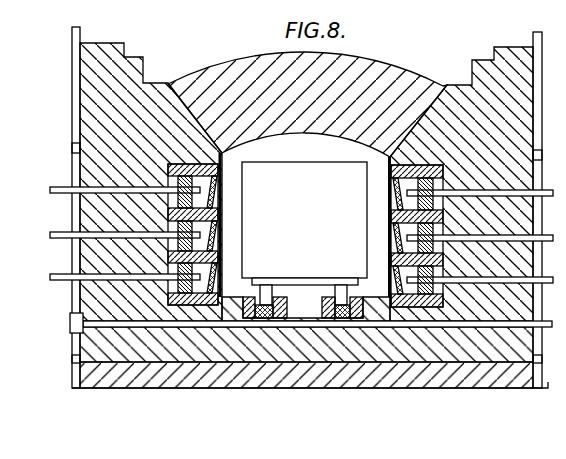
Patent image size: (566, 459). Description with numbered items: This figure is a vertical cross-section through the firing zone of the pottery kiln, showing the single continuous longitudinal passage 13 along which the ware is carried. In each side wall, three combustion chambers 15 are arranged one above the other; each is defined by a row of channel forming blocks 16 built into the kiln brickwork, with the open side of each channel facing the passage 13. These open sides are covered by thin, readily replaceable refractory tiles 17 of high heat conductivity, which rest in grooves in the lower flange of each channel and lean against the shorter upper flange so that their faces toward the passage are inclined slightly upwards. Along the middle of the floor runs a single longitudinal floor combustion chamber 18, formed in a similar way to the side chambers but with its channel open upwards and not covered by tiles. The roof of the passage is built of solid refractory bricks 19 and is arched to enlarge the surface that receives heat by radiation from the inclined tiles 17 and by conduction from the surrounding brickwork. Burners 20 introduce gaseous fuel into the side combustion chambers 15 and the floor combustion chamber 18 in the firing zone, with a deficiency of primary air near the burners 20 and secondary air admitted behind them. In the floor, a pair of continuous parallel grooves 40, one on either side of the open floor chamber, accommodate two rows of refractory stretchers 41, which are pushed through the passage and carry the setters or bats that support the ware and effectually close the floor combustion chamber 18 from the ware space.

The longitudinal passage 13 is at (327, 145).
The combustion chambers 15 is at (209, 288).
The channel forming blocks 16 is at (217, 196).
The refractory tiles 17 is at (213, 273).
The floor combustion chamber 18 is at (293, 328).
The solid refractory bricks 19 is at (232, 83).
The burners 20 is at (170, 212).
The grooves 40 is at (324, 284).
The refractory stretchers 41 is at (342, 302).